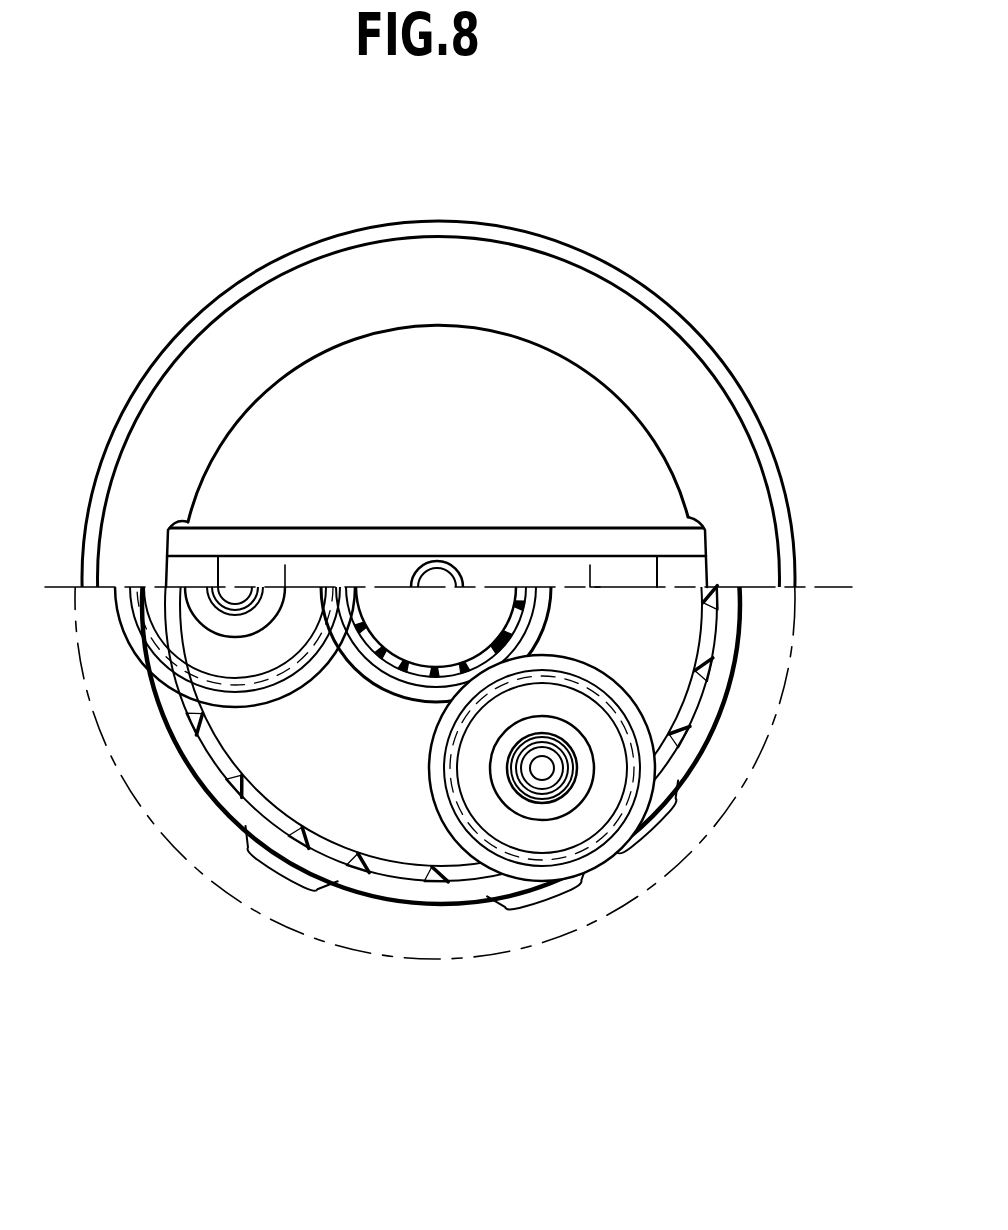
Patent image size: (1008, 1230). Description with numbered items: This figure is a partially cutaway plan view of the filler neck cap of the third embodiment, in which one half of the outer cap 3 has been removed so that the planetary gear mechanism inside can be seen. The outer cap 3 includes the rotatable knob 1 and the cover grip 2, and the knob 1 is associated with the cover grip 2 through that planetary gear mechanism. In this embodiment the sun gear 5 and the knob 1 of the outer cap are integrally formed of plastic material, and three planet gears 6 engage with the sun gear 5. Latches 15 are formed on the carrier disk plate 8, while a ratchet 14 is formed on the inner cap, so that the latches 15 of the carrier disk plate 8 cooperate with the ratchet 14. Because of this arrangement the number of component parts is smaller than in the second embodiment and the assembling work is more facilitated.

The knob 1 is at (515, 530).
The cover grip 2 is at (668, 308).
The outer cap 3 is at (598, 228).
The sun gear 5 is at (552, 617).
The planet gears 6 is at (215, 697).
The carrier disk plate 8 is at (400, 817).
The ratchet 14 is at (305, 830).
The latches 15 is at (673, 733).